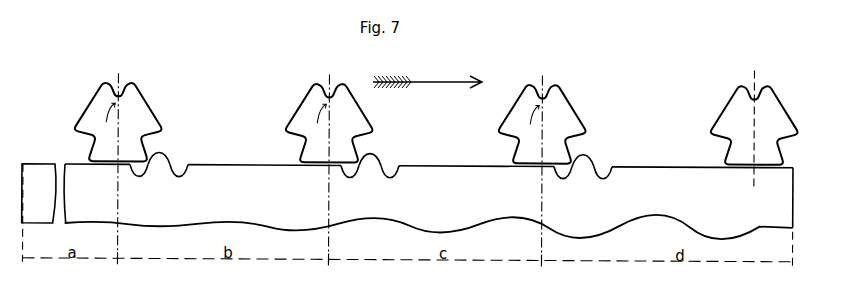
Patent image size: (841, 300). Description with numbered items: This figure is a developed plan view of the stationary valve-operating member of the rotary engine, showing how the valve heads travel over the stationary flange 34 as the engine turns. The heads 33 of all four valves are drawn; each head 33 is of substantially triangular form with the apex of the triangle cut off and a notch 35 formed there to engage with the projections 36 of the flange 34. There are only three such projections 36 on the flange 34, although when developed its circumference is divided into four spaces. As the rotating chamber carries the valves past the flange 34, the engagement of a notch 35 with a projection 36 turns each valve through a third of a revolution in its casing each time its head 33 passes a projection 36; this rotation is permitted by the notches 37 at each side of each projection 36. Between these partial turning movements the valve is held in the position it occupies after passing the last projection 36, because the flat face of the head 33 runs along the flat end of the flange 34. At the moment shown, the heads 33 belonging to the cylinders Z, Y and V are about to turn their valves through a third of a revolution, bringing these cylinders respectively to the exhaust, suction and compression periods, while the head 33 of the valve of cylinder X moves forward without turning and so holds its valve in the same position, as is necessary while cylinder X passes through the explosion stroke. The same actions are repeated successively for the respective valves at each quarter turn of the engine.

The head 33 is at (436, 124).
The flange 34 is at (407, 202).
The notch 35 is at (123, 90).
The projection 36 is at (156, 167).
The notch 37 is at (140, 169).
The curved cylinder Z is at (128, 120).
The curved cylinder Y is at (345, 123).
The curved cylinder V is at (548, 125).
The curved cylinder X is at (742, 122).